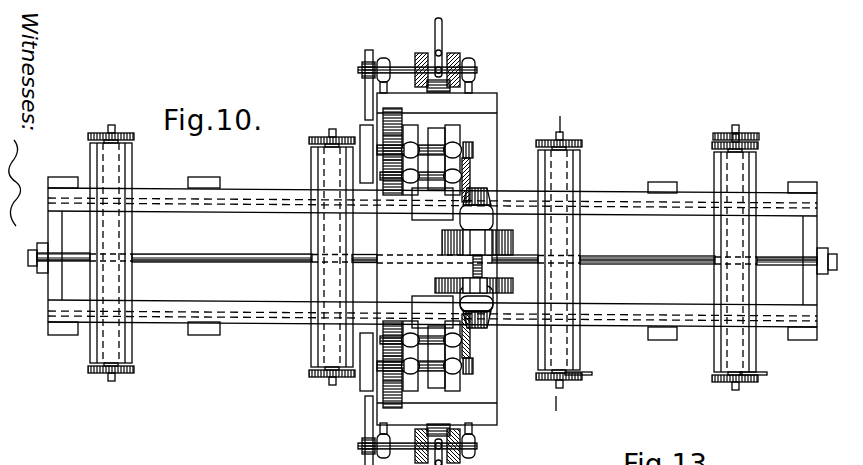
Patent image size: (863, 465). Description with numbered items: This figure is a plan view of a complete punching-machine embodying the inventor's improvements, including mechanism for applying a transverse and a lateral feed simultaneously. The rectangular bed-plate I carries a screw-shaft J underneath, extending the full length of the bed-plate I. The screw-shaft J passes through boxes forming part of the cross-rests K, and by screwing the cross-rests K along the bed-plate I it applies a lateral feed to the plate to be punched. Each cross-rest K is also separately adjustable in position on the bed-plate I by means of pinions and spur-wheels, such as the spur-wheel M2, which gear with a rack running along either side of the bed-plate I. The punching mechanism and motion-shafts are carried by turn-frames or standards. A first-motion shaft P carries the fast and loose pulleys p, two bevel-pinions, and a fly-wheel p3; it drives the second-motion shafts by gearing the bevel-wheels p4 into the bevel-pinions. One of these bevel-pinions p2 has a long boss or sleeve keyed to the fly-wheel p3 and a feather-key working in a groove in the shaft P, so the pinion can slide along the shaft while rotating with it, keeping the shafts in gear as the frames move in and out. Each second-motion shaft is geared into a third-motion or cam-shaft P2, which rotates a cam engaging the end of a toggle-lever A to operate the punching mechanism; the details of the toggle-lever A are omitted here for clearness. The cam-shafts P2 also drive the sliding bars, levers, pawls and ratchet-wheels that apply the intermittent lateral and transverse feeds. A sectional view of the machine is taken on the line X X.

The bed-plate I is at (670, 218).
The screw-shaft J is at (211, 266).
The cross-rest K is at (423, 257).
The first-motion shaft P is at (471, 266).
The third-motion or cam-shaft P2 is at (473, 152).
The fast and loose pulleys p is at (513, 241).
The bevel-pinion p2 is at (492, 329).
The fly-wheel p3 is at (514, 287).
The bevel-wheel p4 is at (471, 185).
The toggle-lever A is at (435, 258).
The section line X X is at (556, 263).
The spur-wheel M2 is at (758, 143).